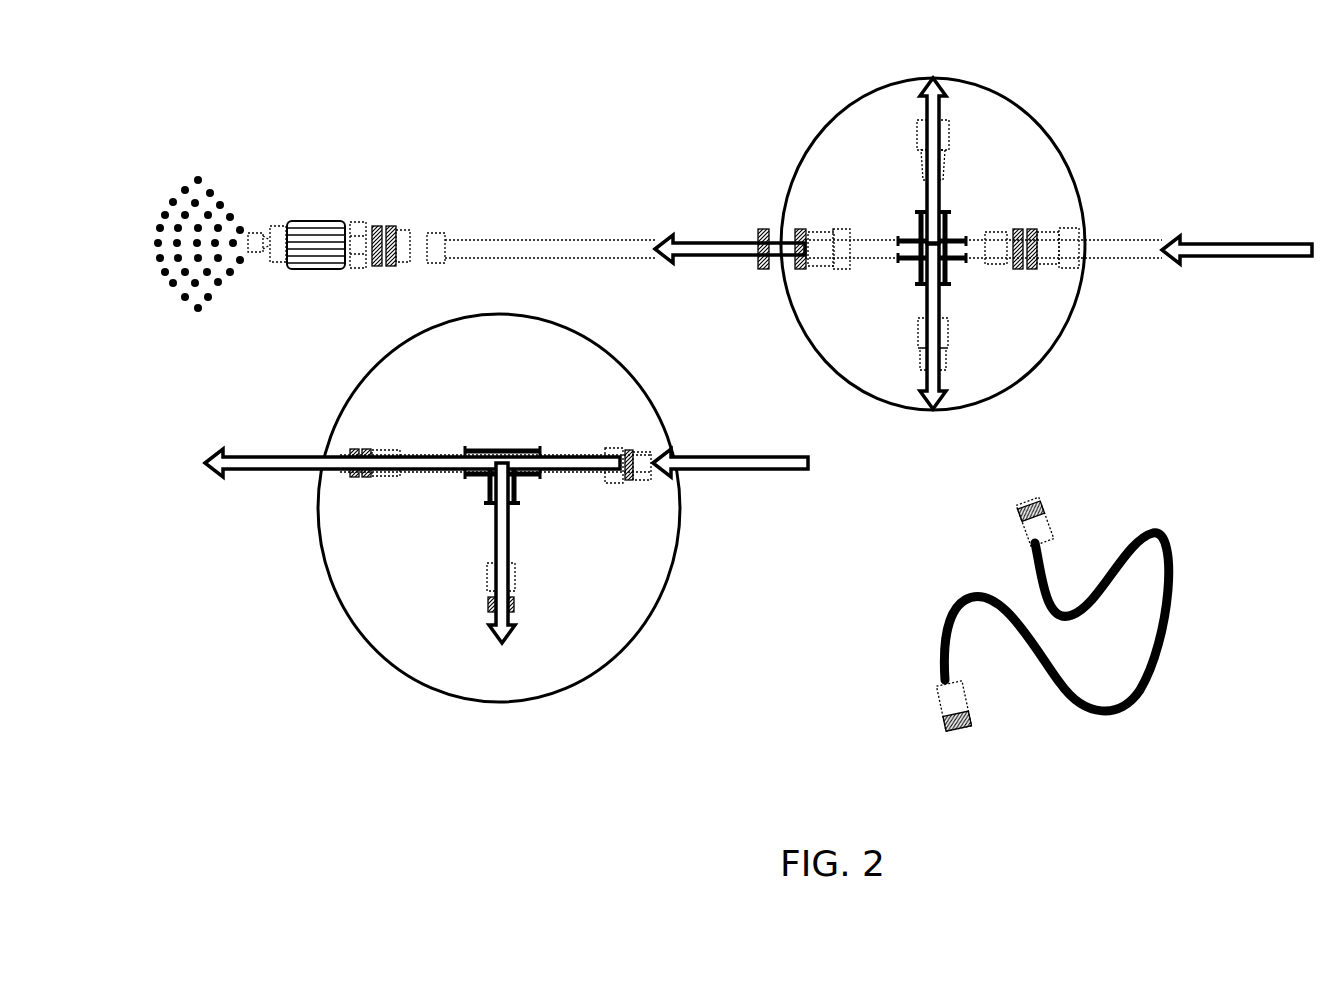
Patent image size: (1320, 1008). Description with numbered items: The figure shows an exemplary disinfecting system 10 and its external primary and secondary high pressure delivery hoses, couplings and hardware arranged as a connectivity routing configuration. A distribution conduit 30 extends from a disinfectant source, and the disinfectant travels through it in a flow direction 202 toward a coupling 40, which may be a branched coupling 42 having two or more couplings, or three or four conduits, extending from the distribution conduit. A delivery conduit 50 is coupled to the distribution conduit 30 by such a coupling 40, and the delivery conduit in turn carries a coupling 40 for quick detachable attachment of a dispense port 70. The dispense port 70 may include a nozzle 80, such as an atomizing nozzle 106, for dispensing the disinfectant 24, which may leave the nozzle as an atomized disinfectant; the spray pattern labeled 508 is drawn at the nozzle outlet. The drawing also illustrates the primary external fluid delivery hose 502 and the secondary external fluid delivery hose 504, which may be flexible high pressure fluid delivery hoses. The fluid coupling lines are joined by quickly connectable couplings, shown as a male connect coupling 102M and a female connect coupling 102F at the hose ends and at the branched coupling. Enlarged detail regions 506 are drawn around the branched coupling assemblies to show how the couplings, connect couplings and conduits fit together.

The disinfecting system 10 is at (478, 108).
The disinfectant 24 is at (208, 193).
The distribution conduit 30 is at (1130, 240).
The coupling 40 is at (404, 240).
The branched coupling 42 is at (952, 240).
The delivery conduit 50 is at (592, 245).
The dispense port 70 is at (328, 222).
The nozzle 80 is at (264, 238).
The atomizing nozzle 106 is at (250, 262).
The flow direction 202 is at (1232, 238).
The primary external fluid delivery hose 502 is at (475, 247).
The secondary external fluid delivery hose 504 is at (1168, 578).
The detail region 506 is at (1050, 365).
The spray pattern 508 is at (195, 292).
The female connect coupling 102F is at (812, 268).
The male connect coupling 102M is at (938, 143).